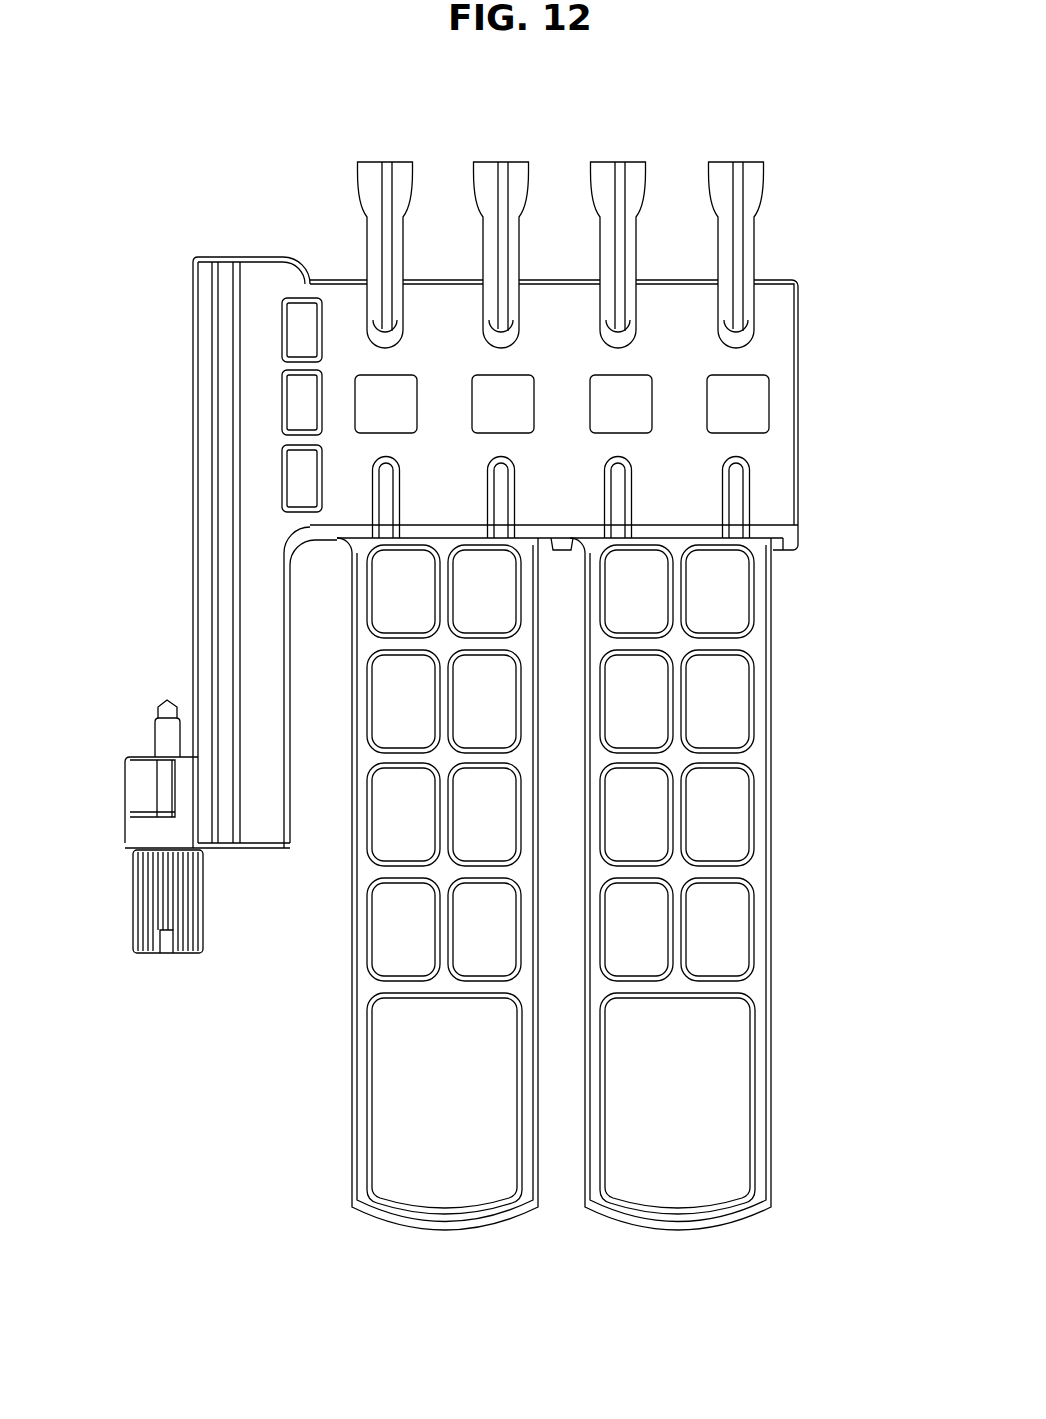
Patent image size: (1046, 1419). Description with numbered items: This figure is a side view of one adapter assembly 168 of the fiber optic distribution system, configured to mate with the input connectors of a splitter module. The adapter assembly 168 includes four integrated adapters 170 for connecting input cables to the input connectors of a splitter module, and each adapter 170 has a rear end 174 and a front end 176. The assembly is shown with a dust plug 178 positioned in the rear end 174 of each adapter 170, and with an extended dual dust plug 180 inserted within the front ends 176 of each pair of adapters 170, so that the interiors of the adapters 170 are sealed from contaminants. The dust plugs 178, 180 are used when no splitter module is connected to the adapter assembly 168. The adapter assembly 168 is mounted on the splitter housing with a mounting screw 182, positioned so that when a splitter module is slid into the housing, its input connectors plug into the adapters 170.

The adapter assembly 168 is at (238, 627).
The integrated adapter 170 is at (345, 300).
The rear end 174 is at (790, 278).
The front end 176 is at (772, 527).
The dust plug 178 is at (386, 196).
The extended dual dust plug 180 is at (462, 1162).
The mounting screw 182 is at (135, 935).